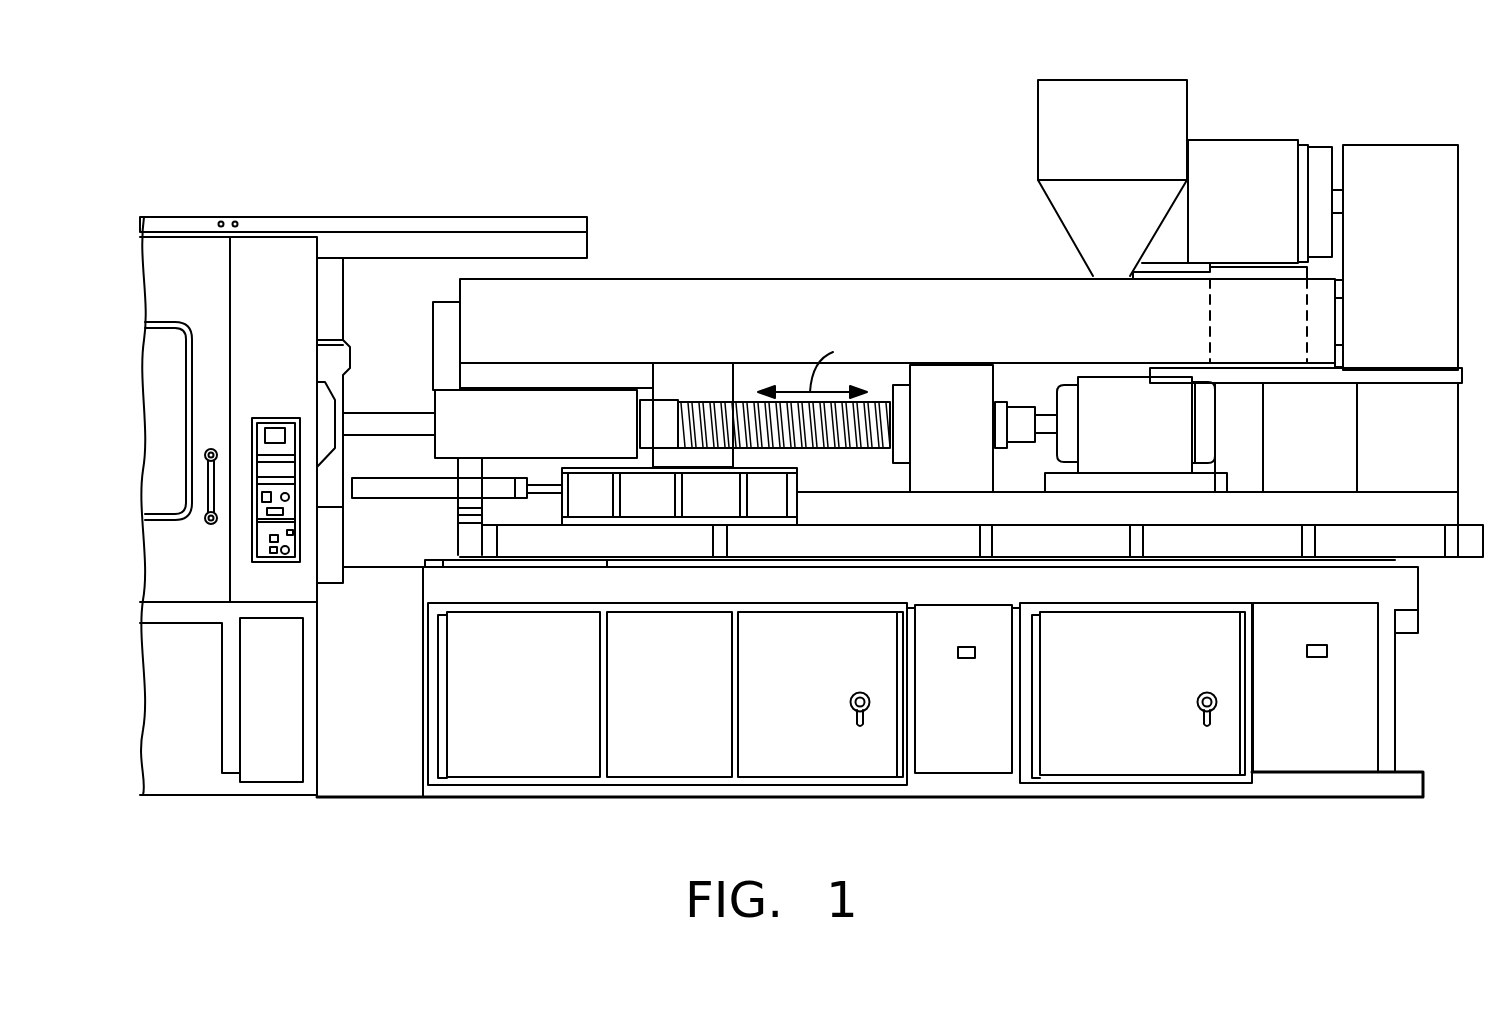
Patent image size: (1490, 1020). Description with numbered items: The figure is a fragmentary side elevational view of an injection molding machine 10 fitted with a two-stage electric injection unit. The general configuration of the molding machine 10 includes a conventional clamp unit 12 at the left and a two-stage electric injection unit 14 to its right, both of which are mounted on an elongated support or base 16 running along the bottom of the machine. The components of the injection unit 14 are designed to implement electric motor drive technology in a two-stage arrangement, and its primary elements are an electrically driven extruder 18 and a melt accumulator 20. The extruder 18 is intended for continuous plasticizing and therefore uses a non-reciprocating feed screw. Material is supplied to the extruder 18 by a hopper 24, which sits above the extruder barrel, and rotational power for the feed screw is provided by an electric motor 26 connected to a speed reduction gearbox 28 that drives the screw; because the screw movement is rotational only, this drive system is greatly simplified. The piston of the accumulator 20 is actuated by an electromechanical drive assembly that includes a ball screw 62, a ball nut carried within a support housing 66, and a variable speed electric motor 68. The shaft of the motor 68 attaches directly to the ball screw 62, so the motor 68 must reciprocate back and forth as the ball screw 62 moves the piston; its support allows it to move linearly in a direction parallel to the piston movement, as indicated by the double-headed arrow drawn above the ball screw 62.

The injection molding machine 10 is at (725, 175).
The clamp unit 12 is at (304, 204).
The two-stage electric injection unit 14 is at (914, 259).
The base 16 is at (362, 768).
The electrically driven extruder 18 is at (1287, 120).
The melt accumulator 20 is at (506, 438).
The hopper 24 is at (1130, 147).
The electric motor 26 is at (1256, 217).
The speed reduction gearbox 28 is at (1385, 265).
The ball screw 62 is at (815, 441).
The support housing 66 is at (932, 443).
The variable speed electric motor 68 is at (1148, 437).